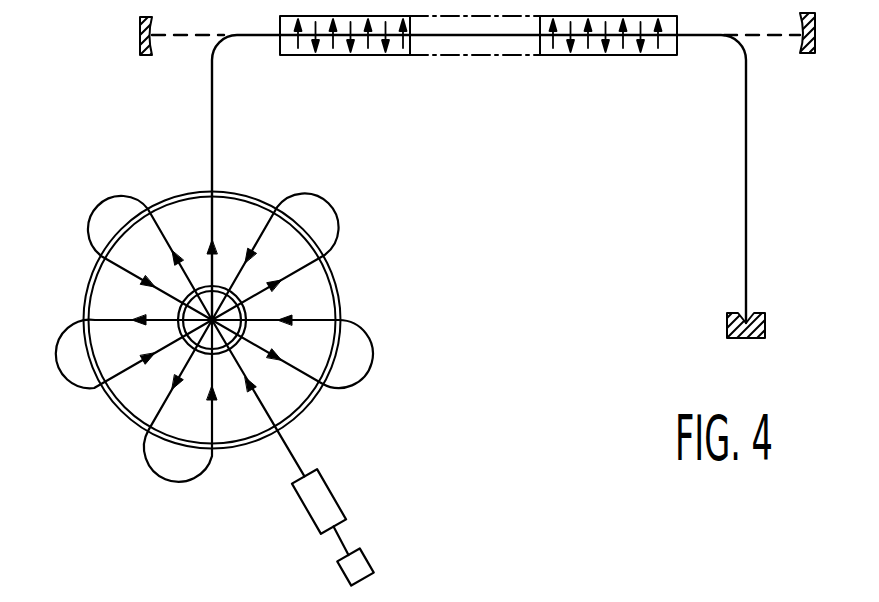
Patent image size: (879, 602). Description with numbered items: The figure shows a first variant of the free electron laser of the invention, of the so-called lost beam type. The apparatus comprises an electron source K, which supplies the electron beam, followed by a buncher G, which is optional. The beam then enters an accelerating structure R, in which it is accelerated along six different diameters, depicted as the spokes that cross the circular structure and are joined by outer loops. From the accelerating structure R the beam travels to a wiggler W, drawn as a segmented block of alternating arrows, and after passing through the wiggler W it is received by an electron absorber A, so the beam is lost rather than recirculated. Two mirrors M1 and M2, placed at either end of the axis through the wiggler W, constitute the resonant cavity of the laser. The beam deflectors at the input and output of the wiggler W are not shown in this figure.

The accelerating structure R is at (116, 434).
The wiggler W is at (403, 57).
The first mirror M1 is at (137, 48).
The second mirror M2 is at (808, 52).
The electron absorber A is at (766, 316).
The buncher G is at (320, 491).
The electron source K is at (360, 564).